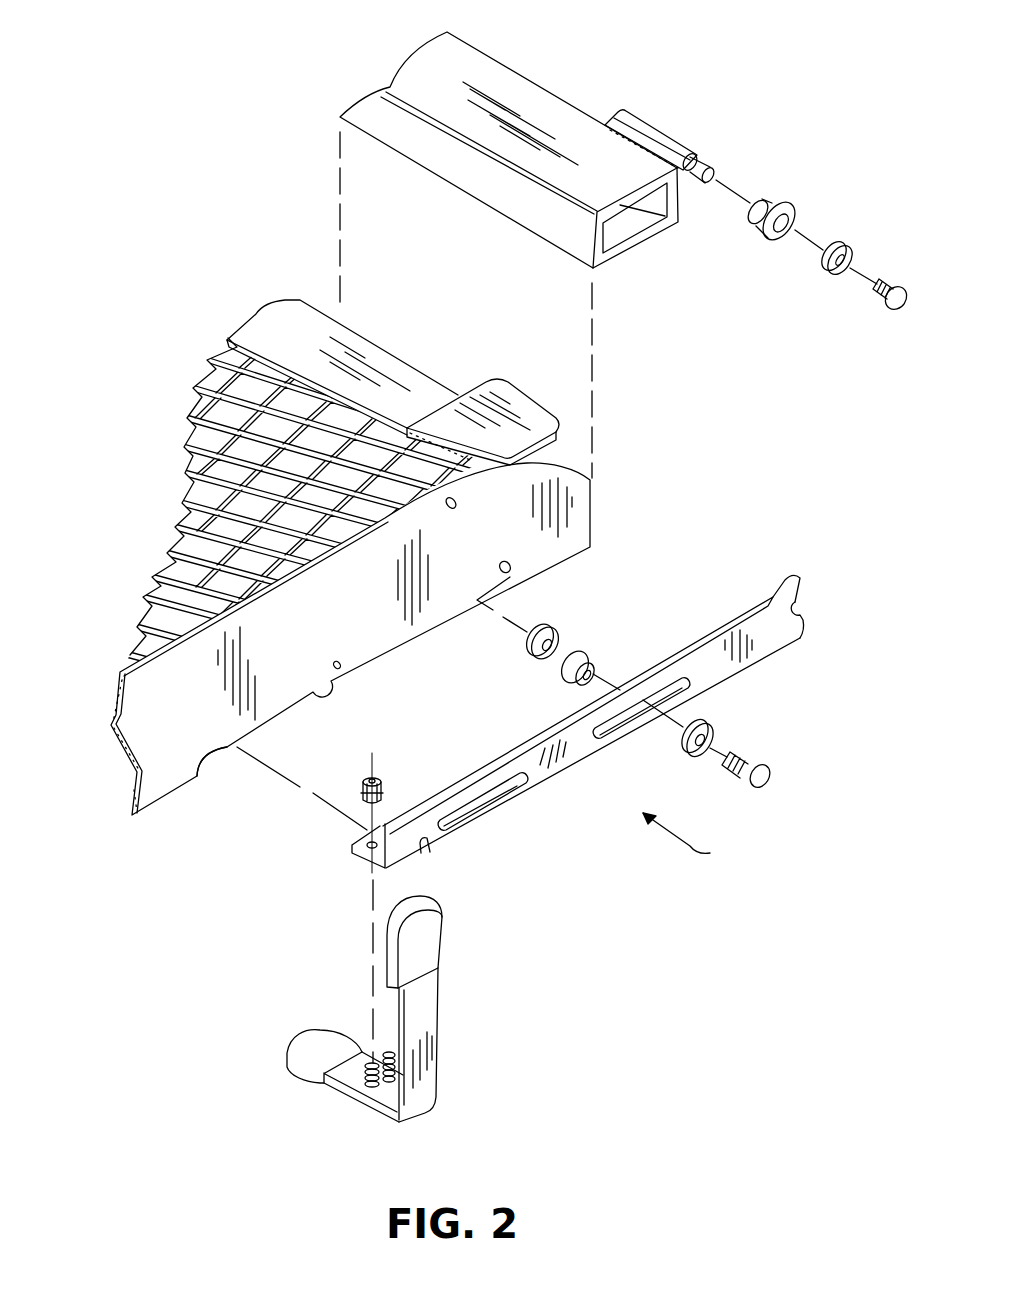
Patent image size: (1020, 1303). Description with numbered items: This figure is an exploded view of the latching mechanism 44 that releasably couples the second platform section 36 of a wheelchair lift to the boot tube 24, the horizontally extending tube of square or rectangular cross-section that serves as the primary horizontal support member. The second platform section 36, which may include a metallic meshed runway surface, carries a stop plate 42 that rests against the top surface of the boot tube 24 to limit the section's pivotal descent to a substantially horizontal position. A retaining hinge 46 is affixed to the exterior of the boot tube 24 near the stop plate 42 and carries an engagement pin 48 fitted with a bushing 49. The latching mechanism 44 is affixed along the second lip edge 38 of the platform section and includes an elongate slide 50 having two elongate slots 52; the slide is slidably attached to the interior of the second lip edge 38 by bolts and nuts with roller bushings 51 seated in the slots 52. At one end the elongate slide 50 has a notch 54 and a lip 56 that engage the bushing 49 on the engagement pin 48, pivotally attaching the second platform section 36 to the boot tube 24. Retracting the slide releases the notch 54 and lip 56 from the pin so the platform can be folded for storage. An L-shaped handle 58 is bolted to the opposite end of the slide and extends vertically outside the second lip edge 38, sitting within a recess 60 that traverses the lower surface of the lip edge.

The boot tube 24 is at (510, 88).
The second platform section 36 is at (200, 480).
The second lip edge 38 is at (140, 645).
The stop plate 42 is at (487, 405).
The latching mechanism 44 is at (692, 843).
The retaining hinge 46 is at (642, 120).
The engagement pin 48 is at (702, 162).
The bushing 49 is at (785, 200).
The elongate slide 50 is at (572, 758).
The roller bushing 51 is at (590, 650).
The elongate slot 52 is at (490, 793).
The notch 54 is at (798, 610).
The lip 56 is at (800, 576).
The L-shaped handle 58 is at (427, 998).
The recess 60 is at (228, 748).